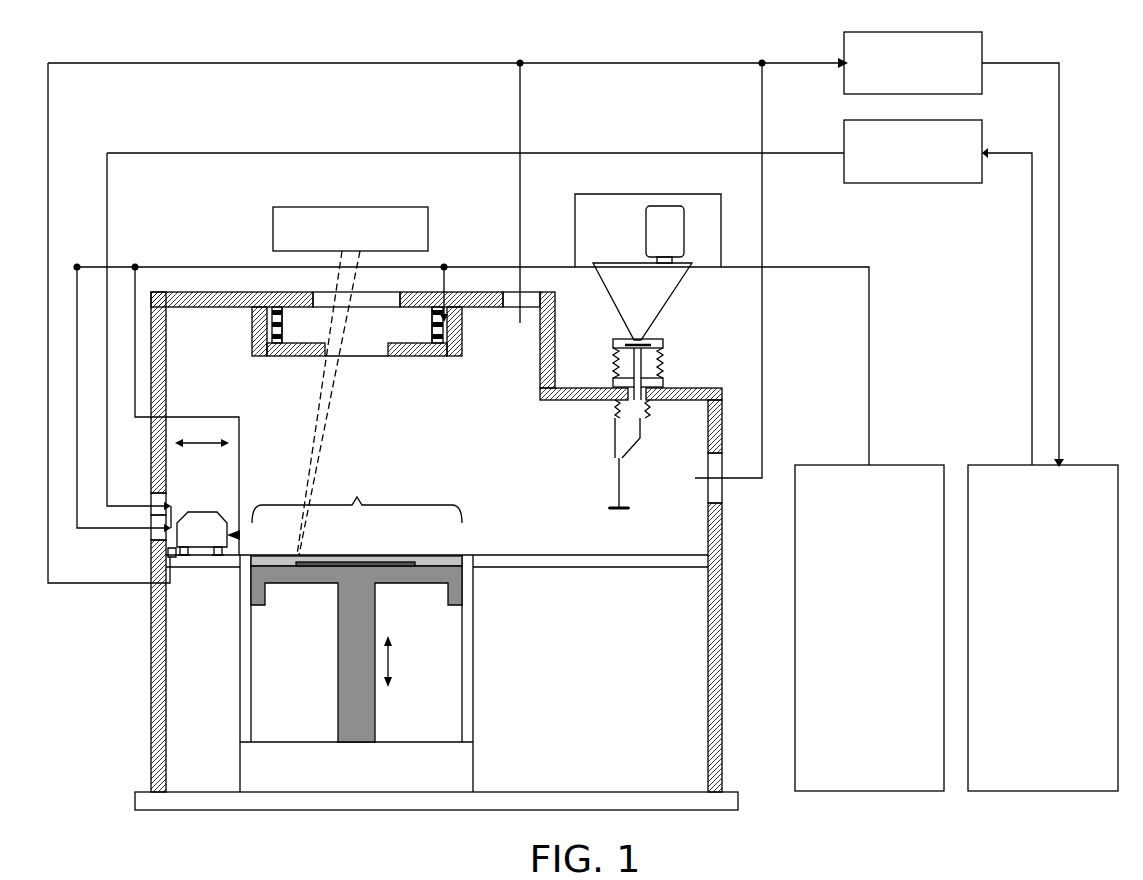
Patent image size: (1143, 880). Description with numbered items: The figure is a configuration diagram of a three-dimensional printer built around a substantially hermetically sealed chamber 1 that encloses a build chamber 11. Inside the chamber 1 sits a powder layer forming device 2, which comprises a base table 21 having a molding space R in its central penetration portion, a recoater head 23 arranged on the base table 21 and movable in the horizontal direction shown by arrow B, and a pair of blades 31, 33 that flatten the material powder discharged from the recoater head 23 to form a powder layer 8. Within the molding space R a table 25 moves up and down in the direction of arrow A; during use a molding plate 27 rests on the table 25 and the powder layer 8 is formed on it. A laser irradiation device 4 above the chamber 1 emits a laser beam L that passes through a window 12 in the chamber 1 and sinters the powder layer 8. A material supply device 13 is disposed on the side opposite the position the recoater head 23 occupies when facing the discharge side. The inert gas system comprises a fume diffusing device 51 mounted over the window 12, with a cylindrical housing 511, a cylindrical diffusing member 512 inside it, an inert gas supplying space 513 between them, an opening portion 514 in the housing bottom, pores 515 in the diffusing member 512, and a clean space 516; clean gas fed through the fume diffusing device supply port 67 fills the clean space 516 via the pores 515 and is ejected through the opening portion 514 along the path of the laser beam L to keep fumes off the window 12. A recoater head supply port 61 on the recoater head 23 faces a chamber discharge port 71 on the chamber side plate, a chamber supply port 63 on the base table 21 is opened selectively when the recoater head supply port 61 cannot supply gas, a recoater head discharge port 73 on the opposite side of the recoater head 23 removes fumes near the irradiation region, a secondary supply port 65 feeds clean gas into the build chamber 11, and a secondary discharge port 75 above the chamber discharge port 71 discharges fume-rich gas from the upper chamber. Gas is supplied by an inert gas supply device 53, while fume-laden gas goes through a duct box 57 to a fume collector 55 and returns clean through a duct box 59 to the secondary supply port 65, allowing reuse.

The chamber 1 is at (167, 292).
The powder layer forming device 2 is at (430, 508).
The laser irradiation device 4 is at (383, 207).
The powder layer 8 is at (383, 567).
The build chamber 11 is at (437, 509).
The window 12 is at (320, 296).
The material supply device 13 is at (663, 305).
The base table 21 is at (393, 673).
The recoater head 23 is at (204, 510).
The table 25 is at (458, 576).
The molding plate 27 is at (400, 566).
The blade 31 is at (224, 558).
The blade 33 is at (178, 558).
The fume diffusing device 51 is at (361, 359).
The housing 511 is at (458, 322).
The diffusing member 512 is at (432, 325).
The inert gas supplying space 513 is at (443, 356).
The opening portion 514 is at (376, 357).
The pores 515 is at (272, 334).
The clean space 516 is at (357, 325).
The inert gas supply device 53 is at (918, 782).
The fume collector 55 is at (1083, 782).
The duct box 57 is at (925, 32).
The duct box 59 is at (925, 120).
The recoater head supply port 61 is at (233, 526).
The chamber supply port 63 is at (168, 536).
The secondary supply port 65 is at (168, 498).
The fume diffusing device supply port 67 is at (441, 293).
The chamber discharge port 71 is at (712, 498).
The recoater head discharge port 73 is at (173, 528).
The secondary discharge port 75 is at (535, 302).
The laser beam L is at (325, 419).
The molding space R is at (357, 500).
The arrow A is at (394, 661).
The arrow B is at (202, 436).